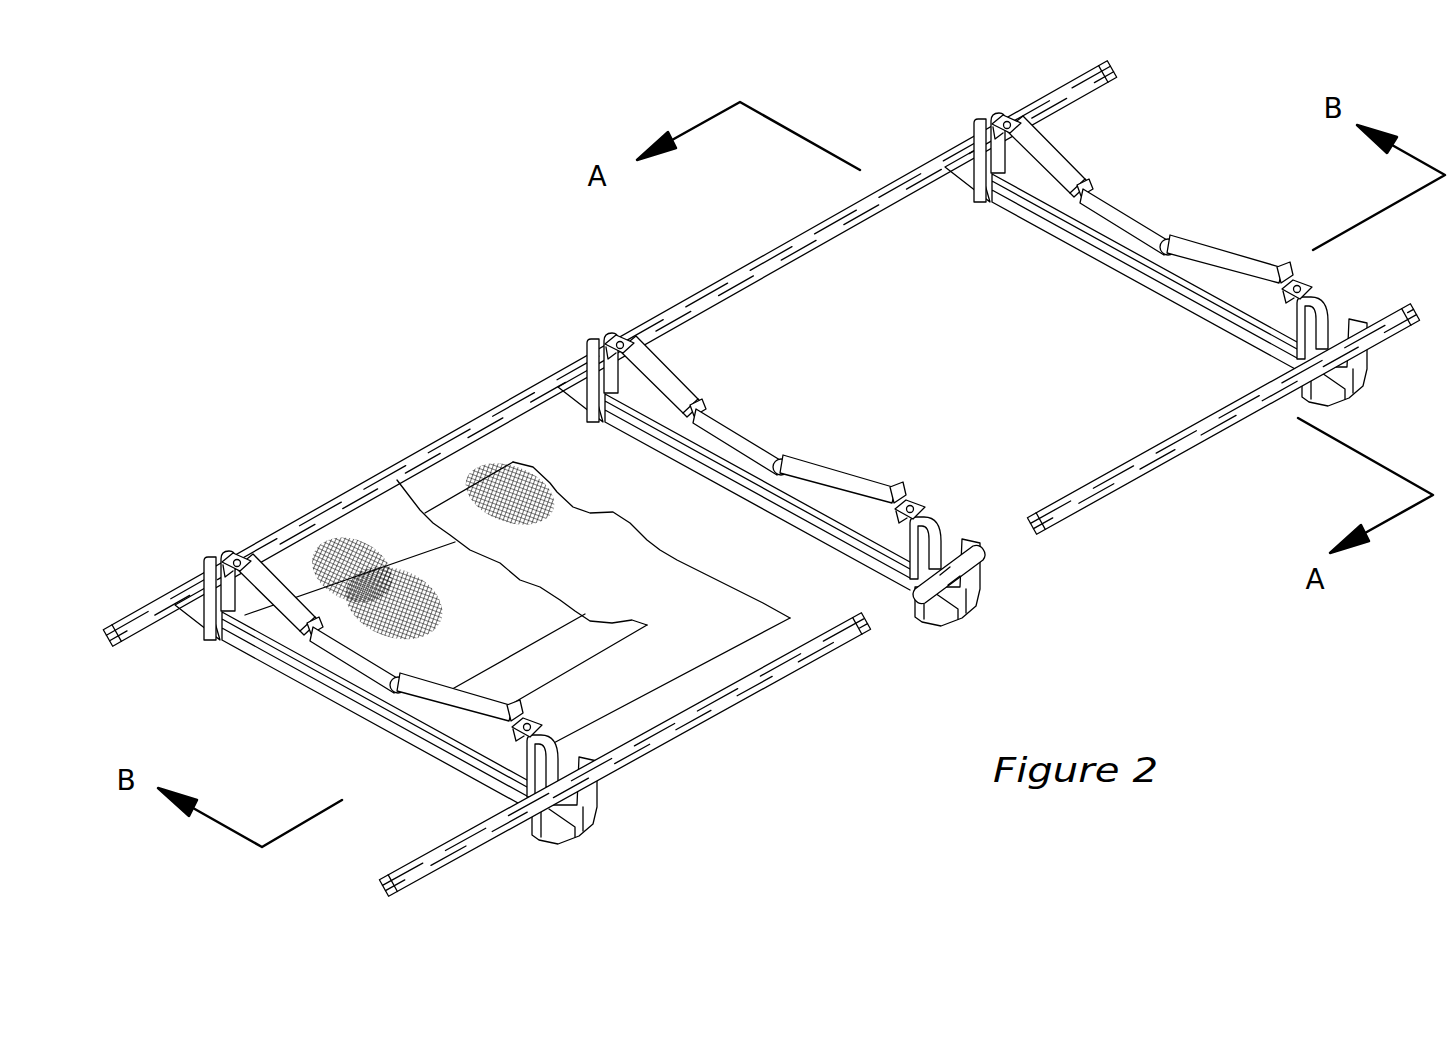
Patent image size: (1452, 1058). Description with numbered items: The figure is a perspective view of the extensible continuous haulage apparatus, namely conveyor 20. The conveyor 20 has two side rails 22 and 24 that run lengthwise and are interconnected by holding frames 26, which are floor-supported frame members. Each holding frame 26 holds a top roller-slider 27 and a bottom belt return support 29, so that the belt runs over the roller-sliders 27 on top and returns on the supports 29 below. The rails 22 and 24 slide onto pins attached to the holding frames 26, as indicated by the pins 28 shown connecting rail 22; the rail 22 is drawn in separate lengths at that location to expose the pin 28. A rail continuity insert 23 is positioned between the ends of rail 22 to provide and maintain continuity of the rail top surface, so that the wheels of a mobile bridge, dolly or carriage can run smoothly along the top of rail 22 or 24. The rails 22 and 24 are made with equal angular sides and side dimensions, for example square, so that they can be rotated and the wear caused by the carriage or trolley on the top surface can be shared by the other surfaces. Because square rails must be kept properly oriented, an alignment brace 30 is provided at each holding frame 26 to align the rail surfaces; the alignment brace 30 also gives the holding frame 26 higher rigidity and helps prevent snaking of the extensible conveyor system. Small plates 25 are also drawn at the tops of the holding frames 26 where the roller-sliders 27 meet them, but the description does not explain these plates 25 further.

The conveyor 20 is at (432, 397).
The side rail 22 is at (1163, 435).
The rail continuity insert 23 is at (1363, 375).
The side rail 24 is at (765, 248).
The hinge plate 25 is at (233, 553).
The holding frame 26 is at (975, 135).
The top roller-slider 27 is at (1135, 165).
The pins 28 is at (910, 593).
The bottom belt return support 29 is at (1050, 233).
The alignment brace 30 is at (593, 802).